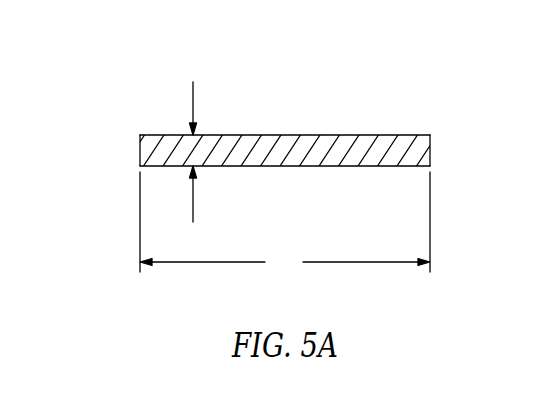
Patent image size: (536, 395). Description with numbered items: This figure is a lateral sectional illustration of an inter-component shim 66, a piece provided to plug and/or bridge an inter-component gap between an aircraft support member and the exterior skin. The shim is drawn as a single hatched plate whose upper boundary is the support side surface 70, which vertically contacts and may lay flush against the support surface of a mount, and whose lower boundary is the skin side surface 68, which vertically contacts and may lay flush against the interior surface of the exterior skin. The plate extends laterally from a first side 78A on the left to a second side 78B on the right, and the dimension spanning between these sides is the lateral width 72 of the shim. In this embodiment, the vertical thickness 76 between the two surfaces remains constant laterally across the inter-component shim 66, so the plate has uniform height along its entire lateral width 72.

The inter-component shim 66 is at (415, 89).
The skin side surface 68 is at (349, 166).
The support side surface 70 is at (349, 135).
The lateral width 72 is at (285, 224).
The vertical thickness 76 is at (193, 203).
The first side 78A is at (140, 150).
The second side 78B is at (430, 152).